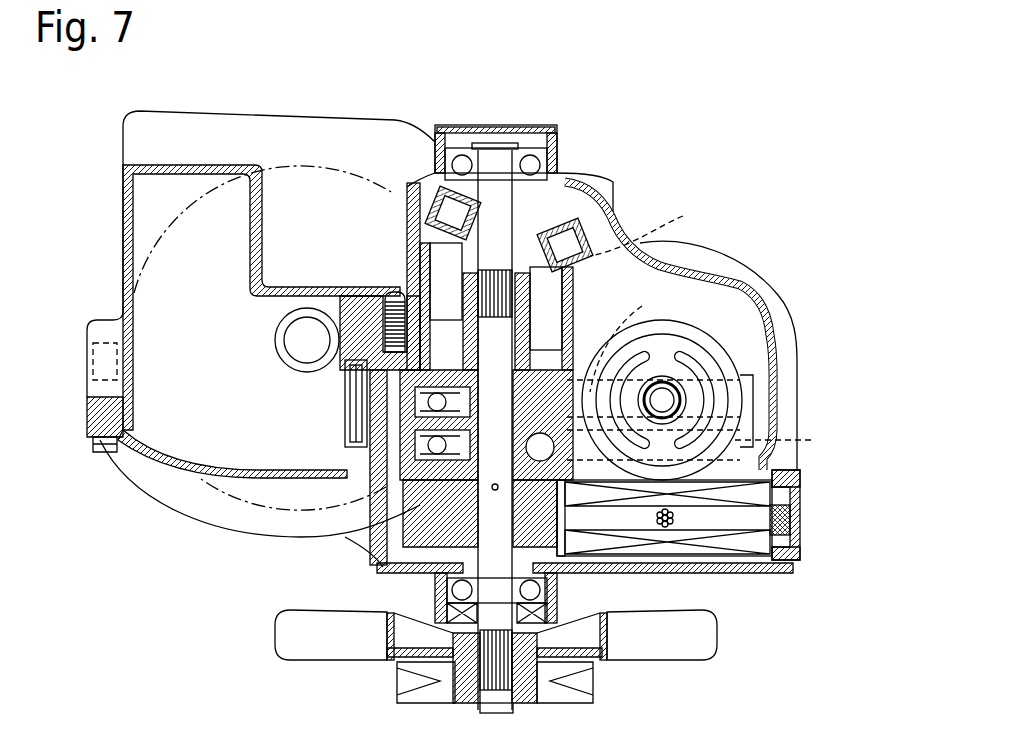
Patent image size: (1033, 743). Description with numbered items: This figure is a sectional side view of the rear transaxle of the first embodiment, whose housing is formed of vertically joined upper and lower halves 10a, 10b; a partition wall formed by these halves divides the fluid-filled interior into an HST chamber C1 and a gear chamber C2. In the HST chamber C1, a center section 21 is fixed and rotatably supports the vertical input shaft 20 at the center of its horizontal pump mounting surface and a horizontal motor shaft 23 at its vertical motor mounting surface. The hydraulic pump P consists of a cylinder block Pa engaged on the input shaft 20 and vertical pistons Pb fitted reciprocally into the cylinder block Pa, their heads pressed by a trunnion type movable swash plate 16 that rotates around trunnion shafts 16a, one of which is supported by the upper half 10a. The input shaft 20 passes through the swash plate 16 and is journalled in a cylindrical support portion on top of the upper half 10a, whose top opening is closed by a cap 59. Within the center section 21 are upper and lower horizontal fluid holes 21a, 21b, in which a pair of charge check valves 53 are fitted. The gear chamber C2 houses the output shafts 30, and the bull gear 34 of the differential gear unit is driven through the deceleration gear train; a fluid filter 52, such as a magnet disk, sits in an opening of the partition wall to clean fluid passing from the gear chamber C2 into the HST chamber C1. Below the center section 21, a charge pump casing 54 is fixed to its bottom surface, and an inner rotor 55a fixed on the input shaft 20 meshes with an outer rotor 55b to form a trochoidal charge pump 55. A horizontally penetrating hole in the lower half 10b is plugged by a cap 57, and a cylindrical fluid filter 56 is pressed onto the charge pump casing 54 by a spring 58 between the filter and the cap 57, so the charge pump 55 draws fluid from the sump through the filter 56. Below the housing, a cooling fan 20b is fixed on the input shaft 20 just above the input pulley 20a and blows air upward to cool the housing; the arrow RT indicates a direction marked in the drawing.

The upper half 10a is at (797, 362).
The lower half 10b is at (797, 422).
The movable swash plate 16 is at (588, 221).
The trunnion shafts 16a is at (657, 227).
The input shaft 20 is at (505, 203).
The input pulley 20a is at (592, 698).
The cooling fan 20b is at (703, 637).
The center section 21 is at (738, 328).
The upper fluid hole 21a is at (629, 337).
The lower fluid hole 21b is at (797, 439).
The motor shaft 23 is at (659, 396).
The output shafts 30 is at (310, 322).
The bull gear 34 is at (182, 496).
The fluid filter 52 is at (345, 402).
The charge check valves 53 is at (409, 287).
The charge pump casing 54 is at (400, 520).
The charge pump 55 is at (852, 617).
The inner rotor 55a is at (600, 560).
The outer rotor 55b is at (700, 556).
The fluid filter 56 is at (800, 487).
The cap 57 is at (800, 538).
The spring 58 is at (790, 520).
The cap 59 is at (497, 125).
The hydraulic pump P is at (428, 248).
The cylinder block Pa is at (568, 293).
The pistons Pb is at (548, 318).
The HST chamber C1 is at (712, 250).
The gear chamber C2 is at (203, 326).
The rotation direction RT is at (724, 156).